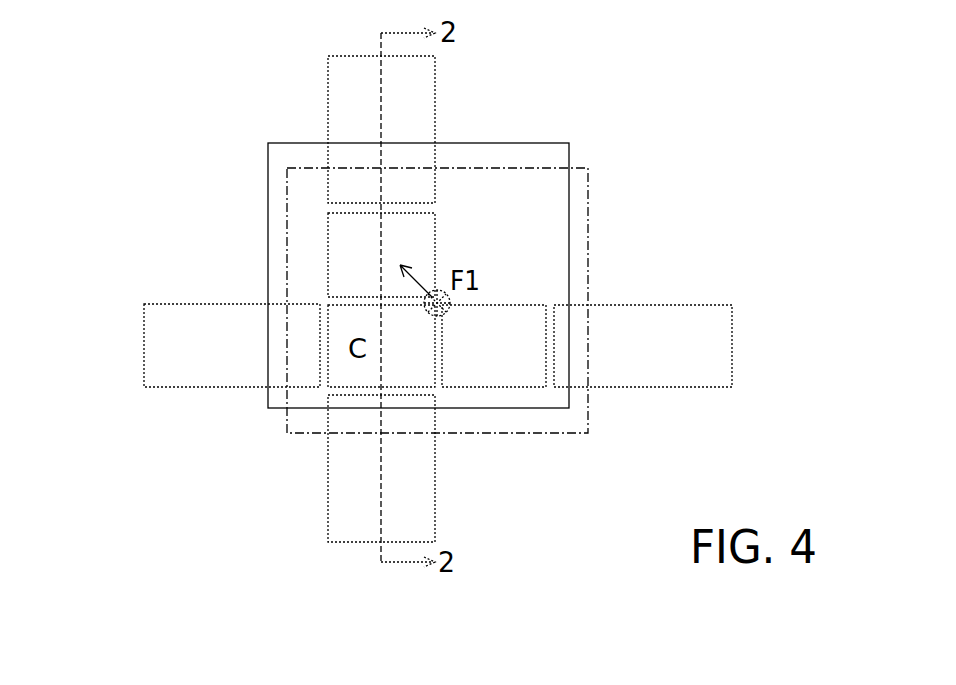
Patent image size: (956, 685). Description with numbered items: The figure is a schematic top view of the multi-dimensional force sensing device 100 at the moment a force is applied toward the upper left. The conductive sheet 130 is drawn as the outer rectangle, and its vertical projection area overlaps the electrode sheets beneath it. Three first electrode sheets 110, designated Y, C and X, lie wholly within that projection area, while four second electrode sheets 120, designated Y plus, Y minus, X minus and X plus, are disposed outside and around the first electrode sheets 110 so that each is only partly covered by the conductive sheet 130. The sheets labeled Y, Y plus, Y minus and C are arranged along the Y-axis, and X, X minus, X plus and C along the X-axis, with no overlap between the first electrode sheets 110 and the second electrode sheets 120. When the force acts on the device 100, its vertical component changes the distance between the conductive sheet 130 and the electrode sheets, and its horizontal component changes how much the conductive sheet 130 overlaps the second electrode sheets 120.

The multi-dimensional force sensing device 100 is at (835, 46).
The first electrode sheet 110 is at (418, 313).
The second electrode sheet 120 is at (348, 91).
The conductive sheet 130 is at (557, 243).